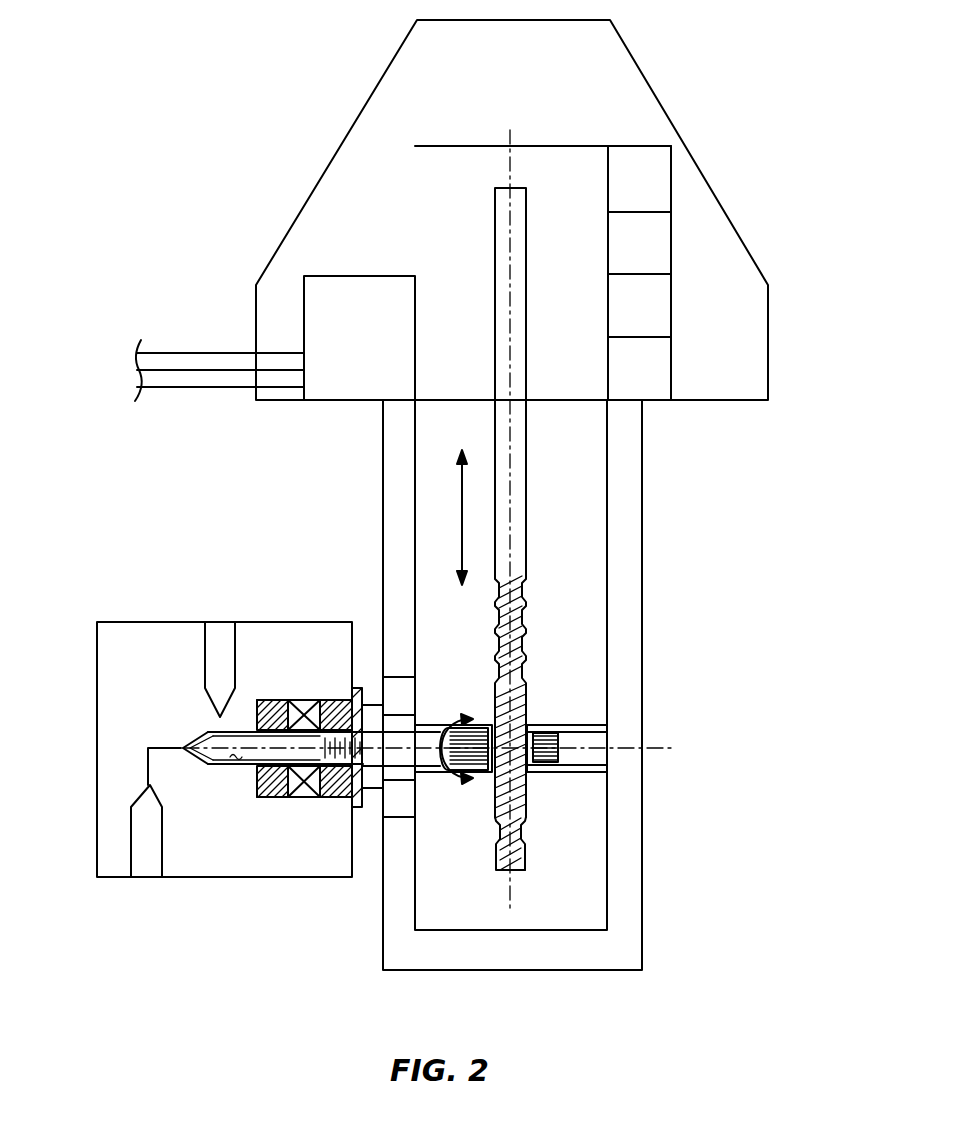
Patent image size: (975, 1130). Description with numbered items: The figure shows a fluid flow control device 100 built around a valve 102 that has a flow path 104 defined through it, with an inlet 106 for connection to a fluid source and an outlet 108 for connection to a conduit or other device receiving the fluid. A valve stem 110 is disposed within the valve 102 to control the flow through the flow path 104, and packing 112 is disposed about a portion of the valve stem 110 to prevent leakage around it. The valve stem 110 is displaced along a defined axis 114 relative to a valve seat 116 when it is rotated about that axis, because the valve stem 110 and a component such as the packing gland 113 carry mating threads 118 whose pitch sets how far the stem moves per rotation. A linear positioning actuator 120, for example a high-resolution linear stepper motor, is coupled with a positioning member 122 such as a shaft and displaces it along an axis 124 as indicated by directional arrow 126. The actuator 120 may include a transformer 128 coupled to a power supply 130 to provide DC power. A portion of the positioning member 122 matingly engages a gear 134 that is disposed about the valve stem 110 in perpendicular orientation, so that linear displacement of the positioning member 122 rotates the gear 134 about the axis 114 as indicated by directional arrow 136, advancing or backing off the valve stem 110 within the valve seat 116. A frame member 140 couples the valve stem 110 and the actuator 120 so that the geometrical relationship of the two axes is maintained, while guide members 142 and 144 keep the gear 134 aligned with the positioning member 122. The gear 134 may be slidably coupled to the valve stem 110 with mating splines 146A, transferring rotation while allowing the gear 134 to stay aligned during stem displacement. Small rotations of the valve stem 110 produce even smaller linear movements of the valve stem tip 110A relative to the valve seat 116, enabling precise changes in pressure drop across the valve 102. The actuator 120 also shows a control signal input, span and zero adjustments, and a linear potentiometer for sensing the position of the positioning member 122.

The fluid flow control device 100 is at (746, 134).
The valve 102 is at (255, 622).
The flow path 104 is at (145, 763).
The inlet 106 is at (143, 878).
The outlet 108 is at (223, 622).
The valve stem 110 is at (236, 762).
The valve stem tip 110A is at (181, 760).
The packing 112 is at (337, 700).
The packing gland 113 is at (383, 718).
The defined axis 114 is at (650, 748).
The valve seat 116 is at (183, 745).
The threads 118 is at (415, 708).
The linear positioning actuator 120 is at (637, 60).
The positioning member 122 is at (527, 508).
The axis 124 is at (510, 893).
The directional arrow 126 is at (462, 497).
The transformer 128 is at (304, 293).
The power supply 130 is at (125, 370).
The gear 134 is at (530, 713).
The directional arrow 136 is at (446, 777).
The frame member 140 is at (642, 573).
The guide member 142 is at (585, 725).
The guide member 144 is at (432, 772).
The mating splines 146A is at (540, 757).